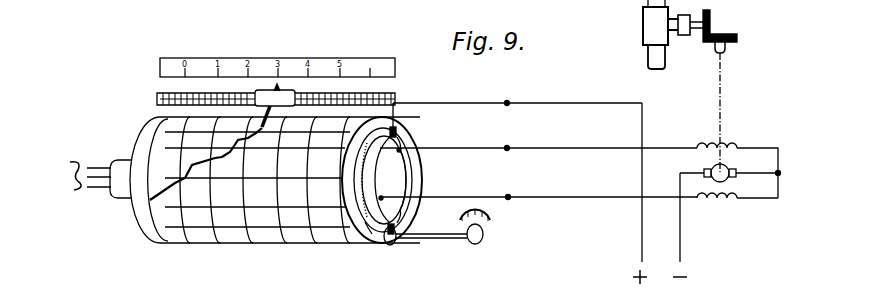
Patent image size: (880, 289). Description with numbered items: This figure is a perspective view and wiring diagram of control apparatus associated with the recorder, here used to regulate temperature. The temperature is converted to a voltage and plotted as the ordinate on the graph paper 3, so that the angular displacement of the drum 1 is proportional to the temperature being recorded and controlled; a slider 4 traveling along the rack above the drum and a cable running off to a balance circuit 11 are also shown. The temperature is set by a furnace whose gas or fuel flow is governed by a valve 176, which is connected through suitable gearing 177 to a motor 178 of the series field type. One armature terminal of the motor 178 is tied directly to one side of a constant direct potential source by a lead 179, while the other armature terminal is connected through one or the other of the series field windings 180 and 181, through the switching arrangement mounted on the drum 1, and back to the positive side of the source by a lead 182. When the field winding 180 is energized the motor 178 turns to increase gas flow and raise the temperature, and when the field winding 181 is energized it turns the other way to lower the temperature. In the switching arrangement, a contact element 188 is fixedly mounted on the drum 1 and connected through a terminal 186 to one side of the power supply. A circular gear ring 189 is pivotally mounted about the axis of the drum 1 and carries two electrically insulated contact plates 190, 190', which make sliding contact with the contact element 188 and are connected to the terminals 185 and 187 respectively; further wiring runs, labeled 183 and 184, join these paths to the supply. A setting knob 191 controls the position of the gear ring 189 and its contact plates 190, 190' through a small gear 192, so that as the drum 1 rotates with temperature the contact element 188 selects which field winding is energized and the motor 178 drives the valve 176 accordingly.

The drum 1 is at (410, 218).
The graph paper 3 is at (285, 243).
The slider and contact brush 4 is at (270, 128).
The balance circuit 11 is at (89, 167).
The valve 176 is at (642, 40).
The gearing 177 is at (738, 28).
The motor 178 is at (704, 168).
The lead 179 is at (681, 250).
The series field winding 180 is at (740, 146).
The series field winding 181 is at (727, 202).
The lead 182 is at (610, 100).
The lead 183 is at (586, 150).
The lead 184 is at (589, 198).
The terminal 185 is at (508, 147).
The terminal 186 is at (508, 102).
The terminal 187 is at (509, 196).
The contact element 188 is at (396, 130).
The circular gear ring 189 is at (370, 222).
The contact plate 190 is at (427, 160).
The contact plate 190' is at (419, 187).
The setting knob 191 is at (483, 240).
The small gear 192 is at (396, 238).